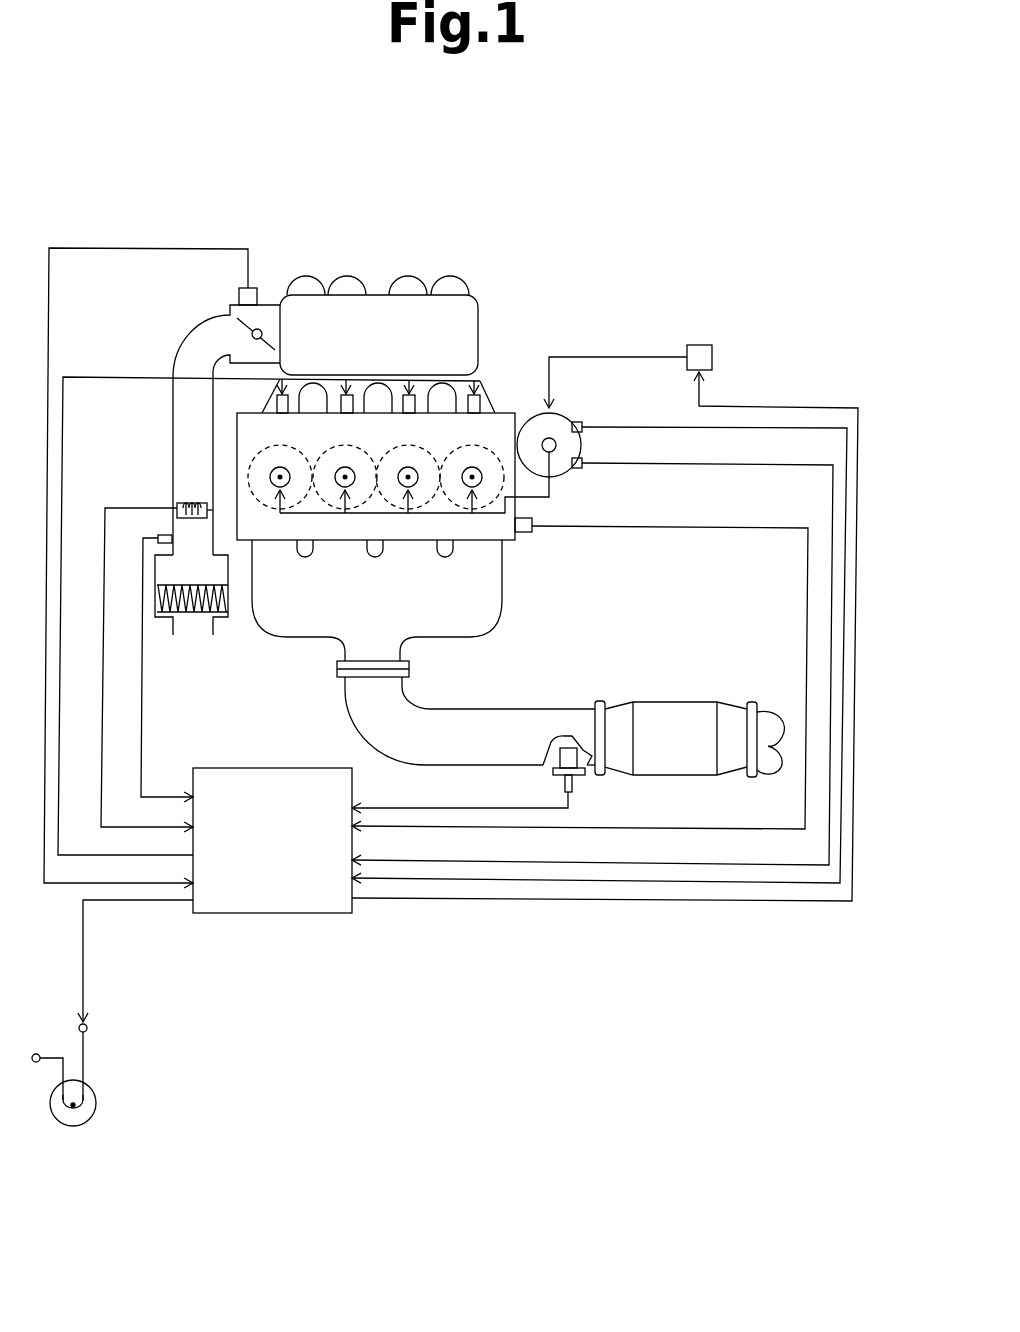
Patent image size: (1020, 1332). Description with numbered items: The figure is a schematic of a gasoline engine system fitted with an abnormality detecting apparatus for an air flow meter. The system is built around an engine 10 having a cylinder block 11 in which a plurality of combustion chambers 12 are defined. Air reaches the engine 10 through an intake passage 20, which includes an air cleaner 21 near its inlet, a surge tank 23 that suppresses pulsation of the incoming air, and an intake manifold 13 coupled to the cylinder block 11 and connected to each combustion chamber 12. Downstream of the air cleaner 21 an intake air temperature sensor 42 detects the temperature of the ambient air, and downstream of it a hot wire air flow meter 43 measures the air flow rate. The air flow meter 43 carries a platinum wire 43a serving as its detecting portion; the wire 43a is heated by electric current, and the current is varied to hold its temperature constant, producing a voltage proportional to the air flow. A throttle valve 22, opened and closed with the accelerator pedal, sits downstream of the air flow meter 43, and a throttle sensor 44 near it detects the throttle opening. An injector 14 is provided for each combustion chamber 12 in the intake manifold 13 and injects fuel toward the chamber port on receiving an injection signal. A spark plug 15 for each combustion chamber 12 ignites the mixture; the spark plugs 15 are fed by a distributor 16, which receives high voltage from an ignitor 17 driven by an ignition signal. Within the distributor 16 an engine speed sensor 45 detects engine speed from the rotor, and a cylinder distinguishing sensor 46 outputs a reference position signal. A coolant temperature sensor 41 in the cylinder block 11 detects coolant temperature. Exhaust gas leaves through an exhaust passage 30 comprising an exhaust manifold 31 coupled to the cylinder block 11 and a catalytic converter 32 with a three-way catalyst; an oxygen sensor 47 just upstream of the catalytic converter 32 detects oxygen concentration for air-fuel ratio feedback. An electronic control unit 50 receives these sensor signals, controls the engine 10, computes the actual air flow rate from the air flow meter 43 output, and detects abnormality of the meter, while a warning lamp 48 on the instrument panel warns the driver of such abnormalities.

The engine 10 is at (512, 555).
The cylinder block 11 is at (235, 428).
The combustion chambers 12 is at (346, 453).
The intake manifold 13 is at (480, 377).
The injector 14 is at (282, 415).
The spark plug 15 is at (409, 482).
The distributor 16 is at (556, 413).
The ignitor 17 is at (713, 354).
The intake passage 20 is at (174, 412).
The air cleaner 21 is at (228, 600).
The throttle valve 22 is at (237, 330).
The surge tank 23 is at (380, 292).
The exhaust passage 30 is at (508, 705).
The exhaust manifold 31 is at (387, 610).
The catalytic converter 32 is at (683, 704).
The coolant temperature sensor 41 is at (530, 534).
The intake air temperature sensor 42 is at (162, 533).
The hot wire air flow meter 43 is at (172, 503).
The platinum wire 43a is at (192, 503).
The throttle sensor 44 is at (266, 290).
The engine speed sensor 45 is at (583, 421).
The cylinder distinguishing sensor 46 is at (583, 468).
The oxygen sensor 47 is at (583, 778).
The warning lamp 48 is at (72, 1128).
The electronic control unit 50 is at (273, 768).